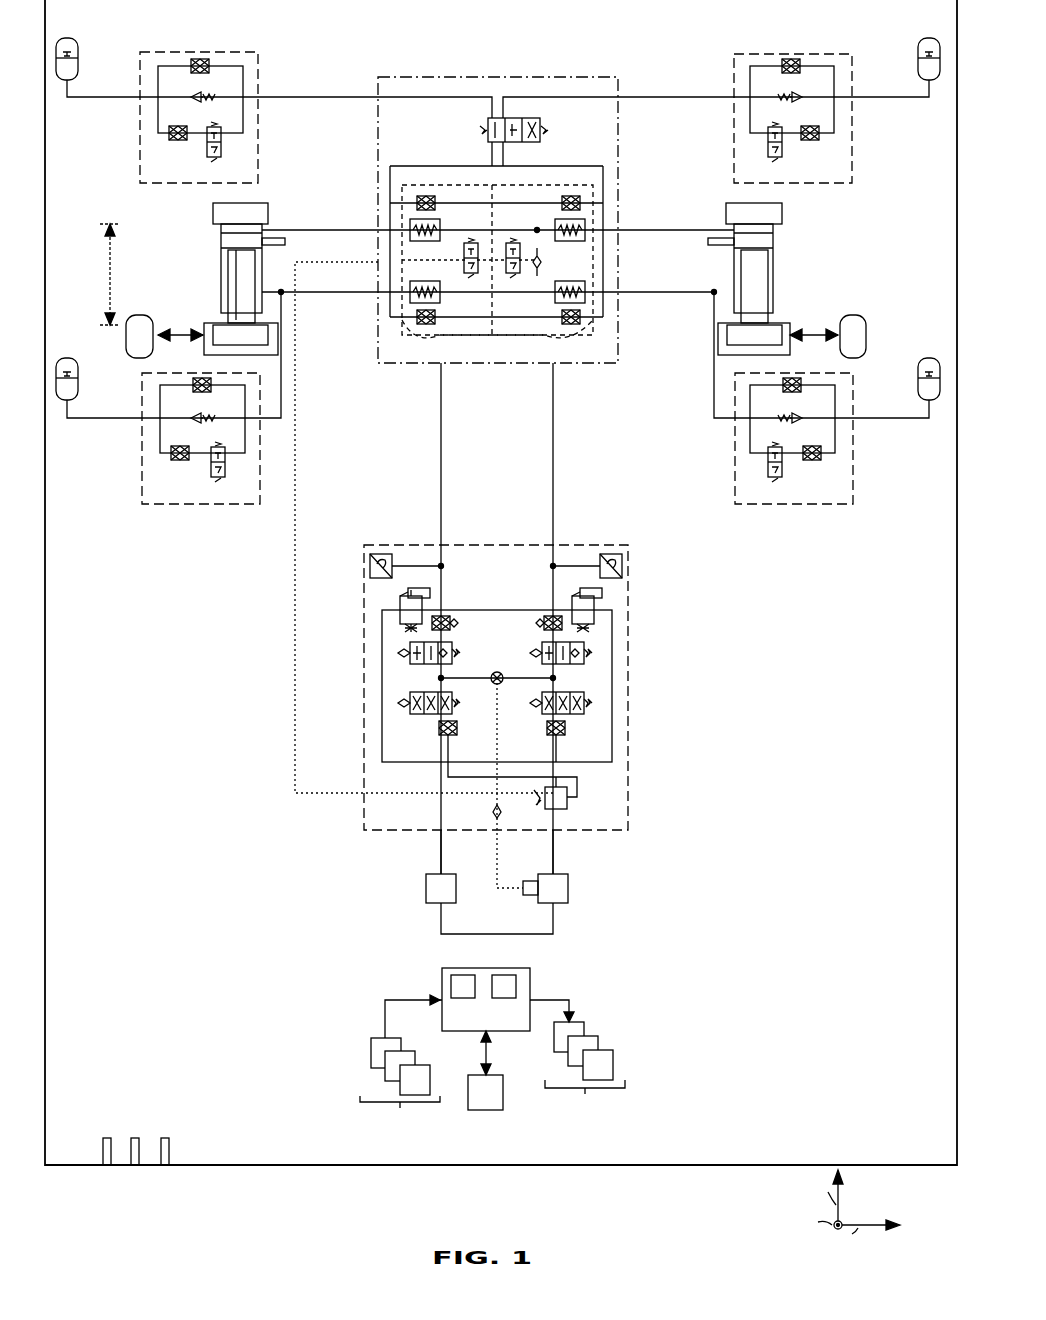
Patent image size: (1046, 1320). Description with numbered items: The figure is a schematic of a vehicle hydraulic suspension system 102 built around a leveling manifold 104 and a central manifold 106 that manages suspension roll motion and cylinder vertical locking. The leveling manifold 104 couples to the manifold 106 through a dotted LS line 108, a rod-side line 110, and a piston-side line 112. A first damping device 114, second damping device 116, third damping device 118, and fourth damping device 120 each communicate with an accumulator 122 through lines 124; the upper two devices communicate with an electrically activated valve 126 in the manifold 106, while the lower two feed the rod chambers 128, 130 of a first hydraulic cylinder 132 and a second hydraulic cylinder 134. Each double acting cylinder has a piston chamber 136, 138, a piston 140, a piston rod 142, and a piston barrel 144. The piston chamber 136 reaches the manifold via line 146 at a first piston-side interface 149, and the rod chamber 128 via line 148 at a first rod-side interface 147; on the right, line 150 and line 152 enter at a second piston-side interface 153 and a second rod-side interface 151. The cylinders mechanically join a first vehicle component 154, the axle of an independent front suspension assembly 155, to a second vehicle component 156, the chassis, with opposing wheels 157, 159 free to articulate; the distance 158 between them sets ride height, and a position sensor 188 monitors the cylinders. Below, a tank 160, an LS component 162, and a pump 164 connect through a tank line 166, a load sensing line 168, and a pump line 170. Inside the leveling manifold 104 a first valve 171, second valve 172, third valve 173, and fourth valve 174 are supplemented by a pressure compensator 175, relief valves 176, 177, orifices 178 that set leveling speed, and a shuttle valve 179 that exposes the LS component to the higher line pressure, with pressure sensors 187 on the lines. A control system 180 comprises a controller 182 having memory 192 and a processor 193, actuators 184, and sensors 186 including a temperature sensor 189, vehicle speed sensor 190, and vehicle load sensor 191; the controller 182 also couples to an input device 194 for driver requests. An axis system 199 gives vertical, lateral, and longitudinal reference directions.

The hydraulic suspension system 102 is at (509, 47).
The leveling manifold 104 is at (372, 546).
The manifold 106 is at (383, 77).
The LS line 108 is at (295, 432).
The line 110 is at (441, 475).
The line 112 is at (553, 475).
The first damping device 114 is at (146, 53).
The second damping device 116 is at (740, 55).
The third damping device 118 is at (142, 405).
The fourth damping device 120 is at (853, 406).
The accumulator 122 is at (68, 38).
The lines 124 is at (107, 98).
The electrically activated valve 126 is at (474, 136).
The rod chamber 128 is at (205, 272).
The rod chamber 130 is at (773, 302).
The first hydraulic cylinder 132 is at (165, 275).
The second hydraulic cylinder 134 is at (838, 272).
The piston chamber 136 is at (230, 233).
The piston chamber 138 is at (760, 232).
The piston 140 is at (235, 247).
The piston rod 142 is at (240, 272).
The piston barrel 144 is at (295, 292).
The line 146 is at (304, 292).
The first rod-side interface 147 is at (377, 296).
The line 148 is at (304, 230).
The first piston-side interface 149 is at (377, 228).
The line 150 is at (656, 230).
The second rod-side interface 151 is at (620, 296).
The line 152 is at (638, 292).
The second piston-side interface 153 is at (621, 228).
The first vehicle component 154 is at (278, 335).
The independent front suspension assembly 155 is at (230, 355).
The second vehicle component 156 is at (213, 213).
The wheel 157 is at (126, 330).
The distance 158 is at (110, 232).
The wheel 159 is at (866, 330).
The tank 160 is at (426, 900).
The load sensing component 162 is at (532, 896).
The pump 164 is at (568, 900).
The tank line 166 is at (441, 868).
The load sensing line 168 is at (497, 870).
The pump line 170 is at (553, 868).
The first valve 171 is at (398, 700).
The second valve 172 is at (398, 654).
The third valve 173 is at (596, 655).
The fourth valve 174 is at (596, 701).
The pressure compensator 175 is at (596, 802).
The relief valve 176 is at (388, 602).
The relief valve 177 is at (604, 602).
The orifices 178 is at (568, 732).
The shuttle valve 179 is at (491, 672).
The control system 180 is at (593, 1006).
The controller 182 is at (487, 988).
The actuators 184 is at (577, 1061).
The sensors 186 is at (401, 1067).
The pressure sensors 187 is at (372, 560).
The position sensor 188 is at (285, 242).
The temperature sensor 189 is at (107, 1138).
The vehicle speed sensor 190 is at (135, 1138).
The vehicle load sensor 191 is at (165, 1138).
The memory 192 is at (451, 984).
The processor 193 is at (516, 984).
The input device 194 is at (486, 1110).
The axis system 199 is at (852, 1215).